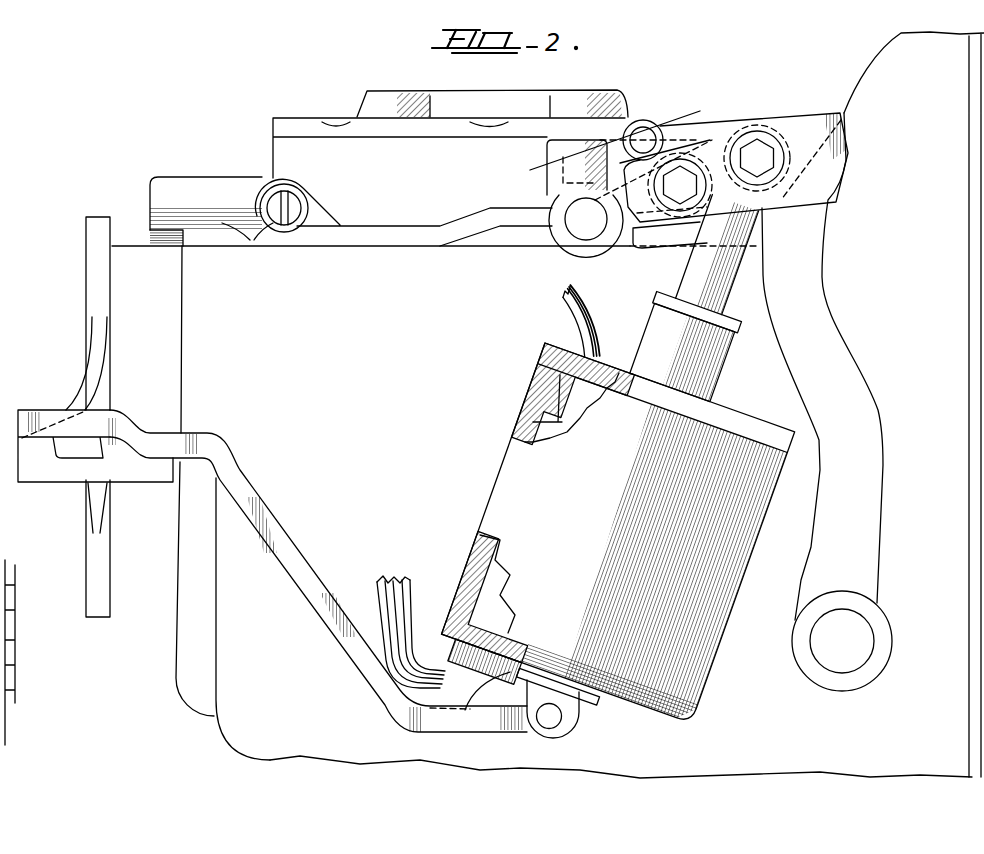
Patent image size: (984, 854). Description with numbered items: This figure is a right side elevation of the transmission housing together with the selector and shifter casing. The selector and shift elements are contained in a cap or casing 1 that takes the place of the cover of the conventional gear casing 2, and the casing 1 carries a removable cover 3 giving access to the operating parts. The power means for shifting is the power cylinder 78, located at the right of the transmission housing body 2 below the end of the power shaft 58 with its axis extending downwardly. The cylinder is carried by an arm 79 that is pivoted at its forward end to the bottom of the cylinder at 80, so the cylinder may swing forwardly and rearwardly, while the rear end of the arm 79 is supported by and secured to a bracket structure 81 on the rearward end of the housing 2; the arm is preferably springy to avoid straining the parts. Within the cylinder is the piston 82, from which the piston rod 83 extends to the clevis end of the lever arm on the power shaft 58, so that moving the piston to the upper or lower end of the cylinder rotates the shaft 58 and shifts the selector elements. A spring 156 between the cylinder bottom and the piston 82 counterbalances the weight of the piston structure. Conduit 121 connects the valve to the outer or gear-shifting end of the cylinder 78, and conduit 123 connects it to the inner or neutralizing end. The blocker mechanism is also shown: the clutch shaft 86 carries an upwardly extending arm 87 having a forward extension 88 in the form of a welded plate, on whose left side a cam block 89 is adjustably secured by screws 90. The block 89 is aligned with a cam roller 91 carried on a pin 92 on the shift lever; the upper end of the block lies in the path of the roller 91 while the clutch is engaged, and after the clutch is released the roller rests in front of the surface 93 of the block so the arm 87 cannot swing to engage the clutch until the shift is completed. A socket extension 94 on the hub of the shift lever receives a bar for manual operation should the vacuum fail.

The cap or casing 1 is at (288, 147).
The gear casing 2 is at (233, 547).
The cover 3 is at (296, 127).
The power shaft 58 is at (612, 192).
The power cylinder 78 is at (520, 483).
The arm 79 is at (343, 635).
The pivot 80 is at (555, 727).
The bracket structure 81 is at (43, 473).
The piston 82 is at (560, 403).
The piston rod 83 is at (702, 283).
The clutch shaft 86 is at (847, 663).
The arm 87 is at (846, 417).
The forward extension 88 is at (776, 200).
The cam block 89 is at (586, 219).
The screws 90 is at (697, 192).
The cam roller 91 is at (652, 130).
The pin 92 is at (624, 130).
The surface 93 is at (630, 243).
The socket extension 94 is at (570, 155).
The conduit 121 is at (583, 312).
The conduit 123 is at (420, 578).
The spring 156 is at (447, 616).